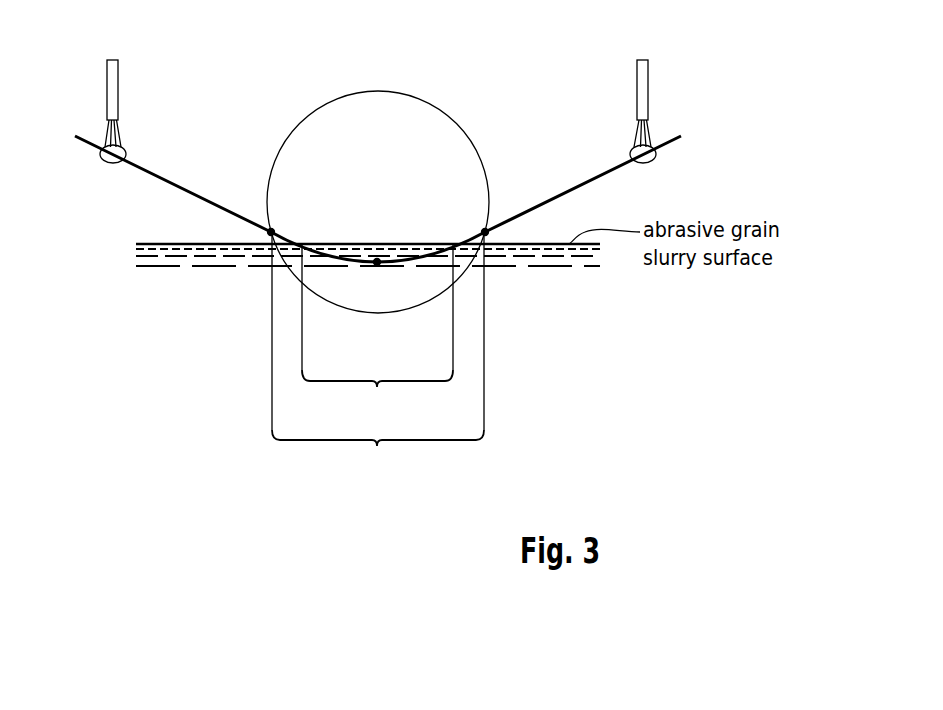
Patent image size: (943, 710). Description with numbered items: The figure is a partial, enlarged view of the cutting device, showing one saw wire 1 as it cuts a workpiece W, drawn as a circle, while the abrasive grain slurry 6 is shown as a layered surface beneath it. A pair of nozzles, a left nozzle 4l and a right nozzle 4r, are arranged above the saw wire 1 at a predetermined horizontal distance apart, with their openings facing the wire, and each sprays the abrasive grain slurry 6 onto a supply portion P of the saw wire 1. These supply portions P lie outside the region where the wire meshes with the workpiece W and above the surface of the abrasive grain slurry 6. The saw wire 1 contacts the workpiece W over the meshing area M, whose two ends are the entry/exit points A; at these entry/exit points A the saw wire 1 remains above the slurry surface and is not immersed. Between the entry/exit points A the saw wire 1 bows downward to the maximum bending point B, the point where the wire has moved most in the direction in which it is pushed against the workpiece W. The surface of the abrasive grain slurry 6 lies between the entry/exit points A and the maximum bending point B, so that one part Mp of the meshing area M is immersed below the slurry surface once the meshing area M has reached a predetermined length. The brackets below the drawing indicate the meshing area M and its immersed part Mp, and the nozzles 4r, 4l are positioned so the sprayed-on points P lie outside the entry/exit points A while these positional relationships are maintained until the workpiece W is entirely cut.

The saw wire 1 is at (163, 179).
The left nozzle 4l is at (107, 83).
The right nozzle 4r is at (648, 83).
The supply portion P is at (100, 154).
The workpiece W is at (397, 112).
The entry/exit point A is at (271, 232).
The maximum bending point B is at (377, 262).
The abrasive grain slurry 6 is at (539, 252).
The part of the meshing area Mp is at (377, 334).
The meshing area M is at (378, 355).